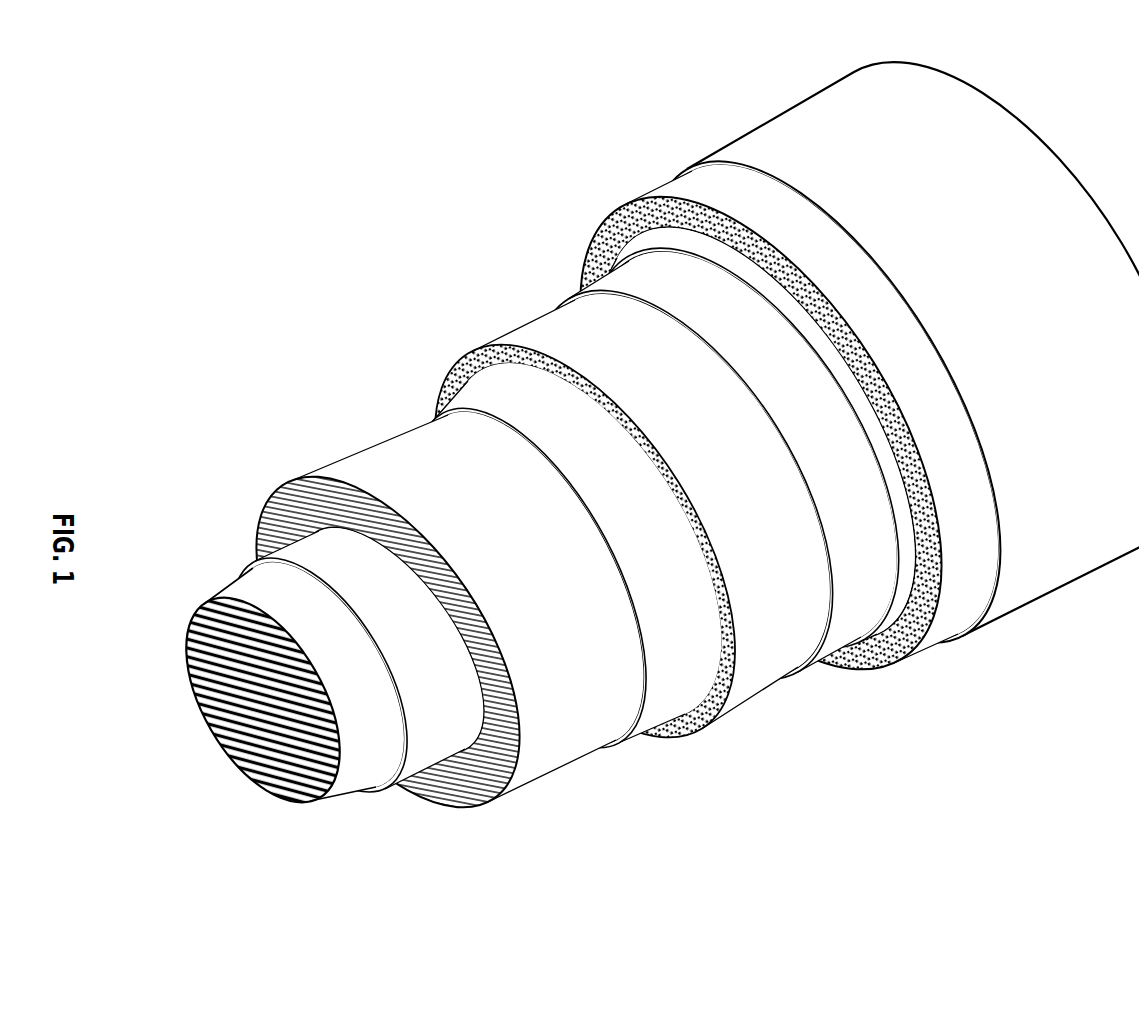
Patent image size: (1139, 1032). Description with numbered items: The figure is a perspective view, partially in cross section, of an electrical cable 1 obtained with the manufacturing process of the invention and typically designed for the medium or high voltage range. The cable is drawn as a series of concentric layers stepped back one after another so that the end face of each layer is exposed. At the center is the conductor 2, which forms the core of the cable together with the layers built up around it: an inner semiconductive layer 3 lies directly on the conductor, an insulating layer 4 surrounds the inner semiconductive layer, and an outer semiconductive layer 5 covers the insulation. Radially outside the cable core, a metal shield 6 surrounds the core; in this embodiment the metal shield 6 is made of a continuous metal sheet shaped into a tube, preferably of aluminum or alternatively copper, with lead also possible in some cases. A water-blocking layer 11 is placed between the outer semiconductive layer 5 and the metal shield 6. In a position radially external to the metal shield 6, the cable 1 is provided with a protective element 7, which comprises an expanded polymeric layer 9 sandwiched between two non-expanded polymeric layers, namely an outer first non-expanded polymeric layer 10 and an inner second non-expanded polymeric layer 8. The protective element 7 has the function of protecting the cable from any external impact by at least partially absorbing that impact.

The electrical cable 1 is at (647, 475).
The conductor 2 is at (247, 703).
The inner semiconductive layer 3 is at (420, 733).
The insulating layer 4 is at (480, 758).
The outer semiconductive layer 5 is at (488, 388).
The metal shield 6 is at (848, 618).
The protective element 7 is at (823, 395).
The inner non-expanded polymeric layer 8 is at (667, 250).
The expanded polymeric layer 9 is at (958, 607).
The outer non-expanded polymeric layer 10 is at (793, 138).
The water-blocking layer 11 is at (750, 670).